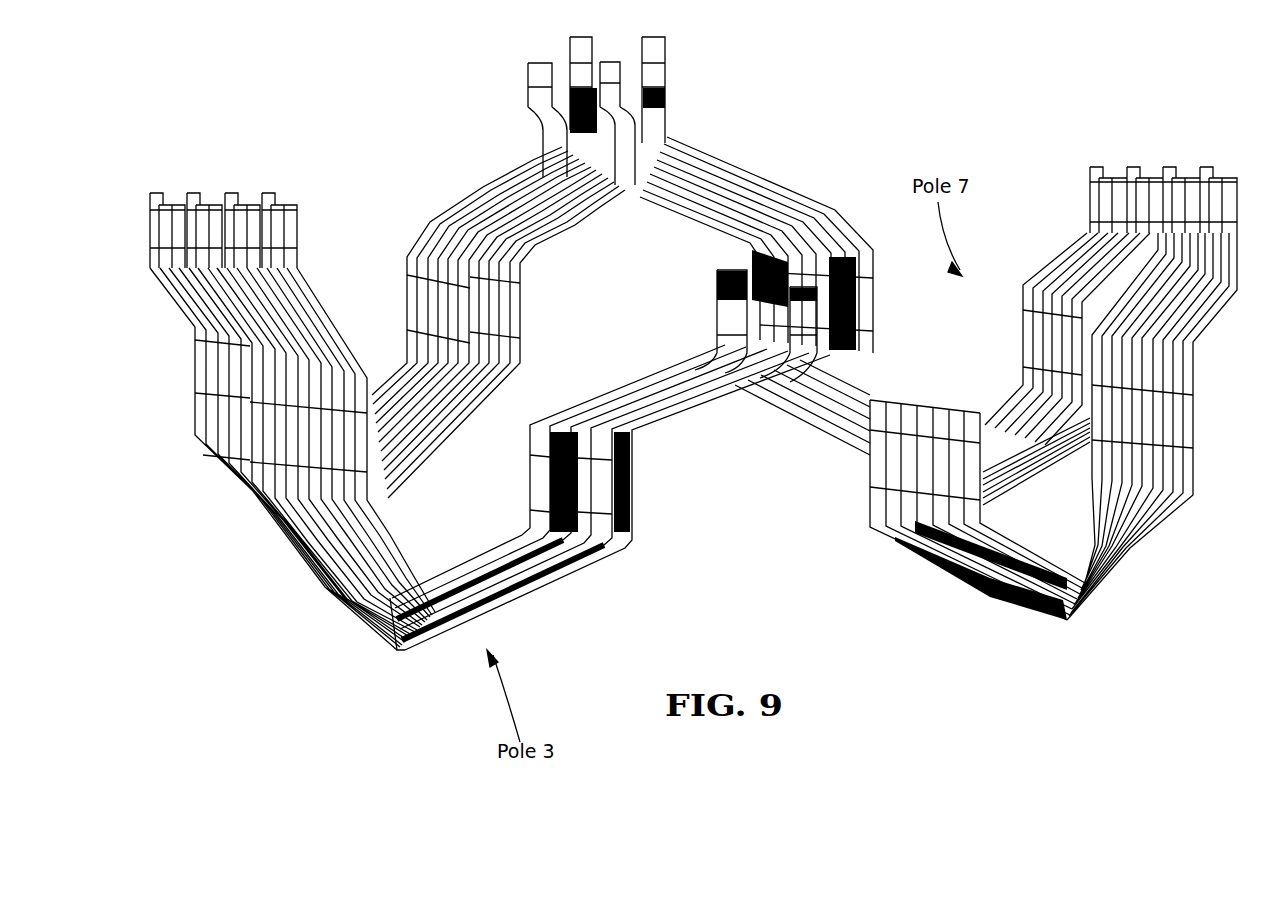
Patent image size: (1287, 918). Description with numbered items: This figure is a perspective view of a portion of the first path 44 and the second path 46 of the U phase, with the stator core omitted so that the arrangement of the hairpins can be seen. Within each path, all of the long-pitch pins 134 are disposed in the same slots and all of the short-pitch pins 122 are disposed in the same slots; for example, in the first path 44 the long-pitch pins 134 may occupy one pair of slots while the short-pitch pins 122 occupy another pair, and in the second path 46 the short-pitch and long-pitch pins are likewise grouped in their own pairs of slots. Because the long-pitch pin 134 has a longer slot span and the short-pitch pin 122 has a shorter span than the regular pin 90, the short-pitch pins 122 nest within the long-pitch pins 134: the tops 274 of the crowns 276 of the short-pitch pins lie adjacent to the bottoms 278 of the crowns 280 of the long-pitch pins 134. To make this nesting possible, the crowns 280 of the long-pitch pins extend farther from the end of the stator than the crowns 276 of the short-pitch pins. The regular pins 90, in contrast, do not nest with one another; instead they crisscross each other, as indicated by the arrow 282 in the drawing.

The first path 44 is at (838, 208).
The second path 46 is at (753, 268).
The regular pin 90 is at (1165, 548).
The short-pitch pin 122 is at (1015, 410).
The long-pitch pin 134 is at (495, 600).
The top of crown 274 is at (420, 632).
The crown of short-pitch pin 276 is at (358, 618).
The bottom of crown 278 is at (374, 636).
The crown of long-pitch pin 280 is at (395, 660).
The arrow 282 is at (1112, 622).